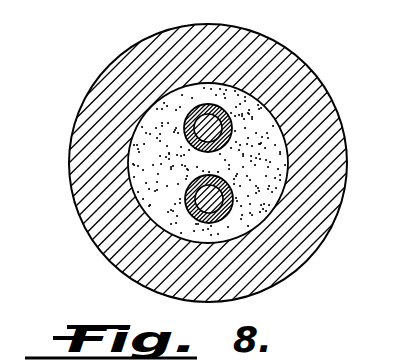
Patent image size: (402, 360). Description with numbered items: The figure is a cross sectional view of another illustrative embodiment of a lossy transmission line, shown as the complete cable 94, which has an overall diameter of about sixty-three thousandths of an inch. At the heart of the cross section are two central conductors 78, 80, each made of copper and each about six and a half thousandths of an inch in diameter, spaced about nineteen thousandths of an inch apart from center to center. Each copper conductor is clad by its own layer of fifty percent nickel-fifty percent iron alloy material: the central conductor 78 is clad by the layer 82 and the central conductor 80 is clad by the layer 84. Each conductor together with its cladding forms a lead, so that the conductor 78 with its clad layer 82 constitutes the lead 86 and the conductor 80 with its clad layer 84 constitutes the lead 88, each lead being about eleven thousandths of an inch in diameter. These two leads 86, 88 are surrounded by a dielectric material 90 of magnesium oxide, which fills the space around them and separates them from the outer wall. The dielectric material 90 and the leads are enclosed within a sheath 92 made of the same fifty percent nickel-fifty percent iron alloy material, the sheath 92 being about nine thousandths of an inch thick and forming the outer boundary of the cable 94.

The central conductor 78 is at (196, 208).
The central conductor 80 is at (195, 124).
The clad layer 82 is at (233, 201).
The clad layer 84 is at (226, 122).
The lead 86 is at (200, 234).
The lead 88 is at (193, 103).
The dielectric material 90 is at (277, 157).
The sheath 92 is at (307, 243).
The cable 94 is at (293, 42).